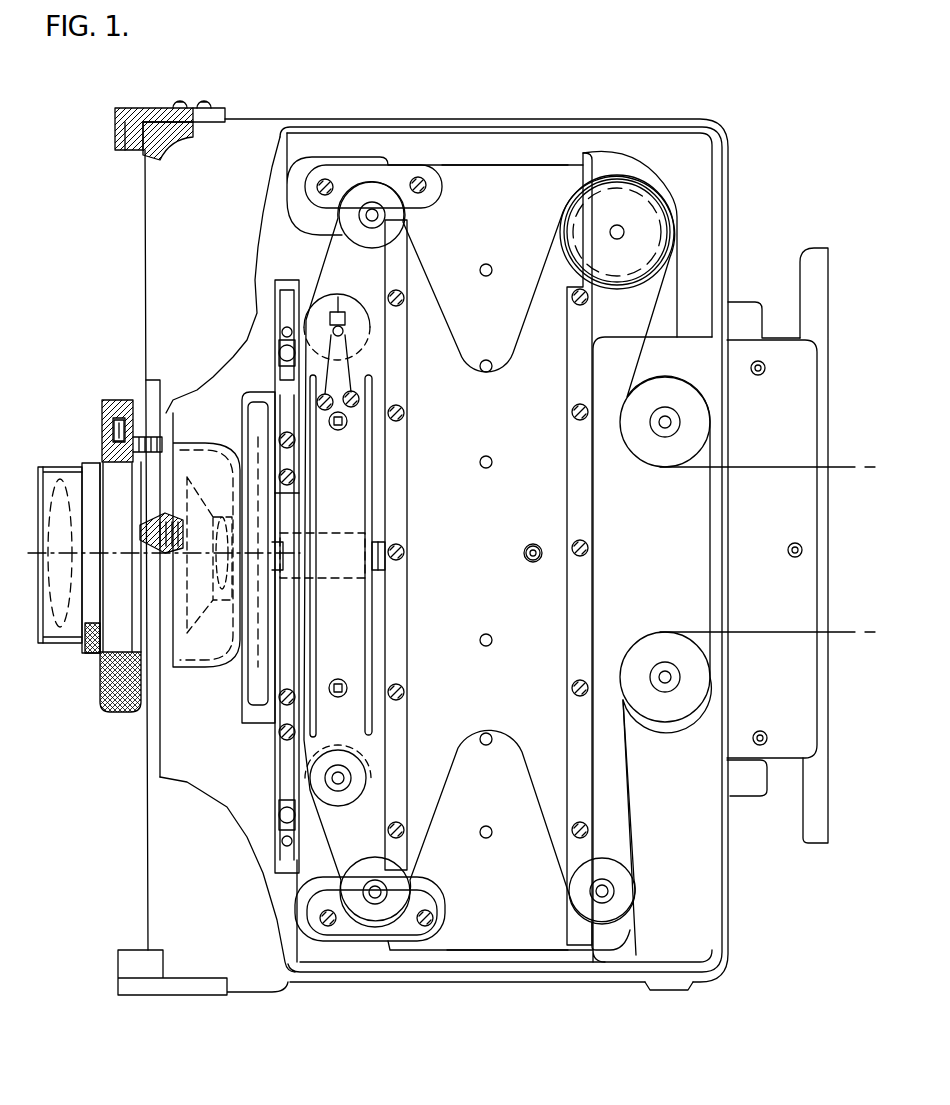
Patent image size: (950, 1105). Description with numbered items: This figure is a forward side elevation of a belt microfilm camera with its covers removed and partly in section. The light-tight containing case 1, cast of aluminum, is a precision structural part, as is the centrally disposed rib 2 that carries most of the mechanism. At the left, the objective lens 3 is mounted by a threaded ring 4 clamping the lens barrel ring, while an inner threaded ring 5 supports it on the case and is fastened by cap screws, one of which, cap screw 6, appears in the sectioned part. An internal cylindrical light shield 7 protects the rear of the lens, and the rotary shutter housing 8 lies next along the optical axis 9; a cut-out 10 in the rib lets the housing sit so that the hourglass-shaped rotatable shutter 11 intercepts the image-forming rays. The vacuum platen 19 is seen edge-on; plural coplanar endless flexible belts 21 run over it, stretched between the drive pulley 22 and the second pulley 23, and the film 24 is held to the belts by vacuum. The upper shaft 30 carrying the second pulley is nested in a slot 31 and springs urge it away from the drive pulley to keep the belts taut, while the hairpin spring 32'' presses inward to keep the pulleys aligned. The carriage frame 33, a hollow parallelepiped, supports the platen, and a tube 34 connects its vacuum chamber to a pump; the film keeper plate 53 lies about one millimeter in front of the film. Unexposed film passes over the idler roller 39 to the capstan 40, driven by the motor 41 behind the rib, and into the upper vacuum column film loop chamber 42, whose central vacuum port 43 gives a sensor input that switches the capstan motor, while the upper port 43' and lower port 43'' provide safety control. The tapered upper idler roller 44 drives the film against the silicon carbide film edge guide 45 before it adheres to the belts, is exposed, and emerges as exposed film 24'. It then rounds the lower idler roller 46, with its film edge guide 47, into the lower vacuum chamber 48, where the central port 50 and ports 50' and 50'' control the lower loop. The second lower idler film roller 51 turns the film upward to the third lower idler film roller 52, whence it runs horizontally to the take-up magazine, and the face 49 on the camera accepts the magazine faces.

The light-tight containing case 1 is at (634, 119).
The centrally disposed rib 2 is at (226, 768).
The objective lens 3 is at (56, 644).
The threaded ring 4 is at (101, 412).
The inner threaded ring 5 is at (150, 402).
The cap screw 6 is at (124, 452).
The internal cylindrical light shield 7 is at (200, 456).
The rotary shutter housing 8 is at (257, 384).
The optical axis 9 is at (205, 553).
The cut-out 10 is at (258, 724).
The rotatable shutter 11 is at (258, 668).
The vacuum platen 19 is at (318, 494).
The endless flexible belts 21 is at (308, 610).
The drive pulley 22 is at (360, 756).
The second pulley 23 is at (383, 545).
The film 24 is at (578, 548).
The exposed film 24' is at (600, 720).
The upper shaft 30 is at (337, 327).
The slot 31 is at (342, 306).
The hairpin spring 32'' is at (362, 358).
The carriage frame 33 is at (348, 658).
The tube 34 is at (540, 546).
The idler roller 39 is at (687, 370).
The capstan 40 is at (617, 246).
The motor 41 is at (675, 185).
The upper vacuum column film loop chamber 42 is at (492, 338).
The central vacuum port 43 is at (500, 358).
The upper port 43' is at (508, 263).
The lower port 43'' is at (509, 450).
The upper idler roller 44 is at (358, 243).
The film edge guide 45 is at (413, 208).
The lower idler roller 46 is at (398, 888).
The film edge guide 47 is at (410, 906).
The lower vacuum chamber 48 is at (494, 808).
The face 49 is at (829, 294).
The central port 50 is at (476, 755).
The port 50' is at (507, 633).
The port 50'' is at (511, 828).
The second lower idler film roller 51 is at (618, 848).
The third lower idler film roller 52 is at (672, 712).
The film keeper plate 53 is at (296, 322).